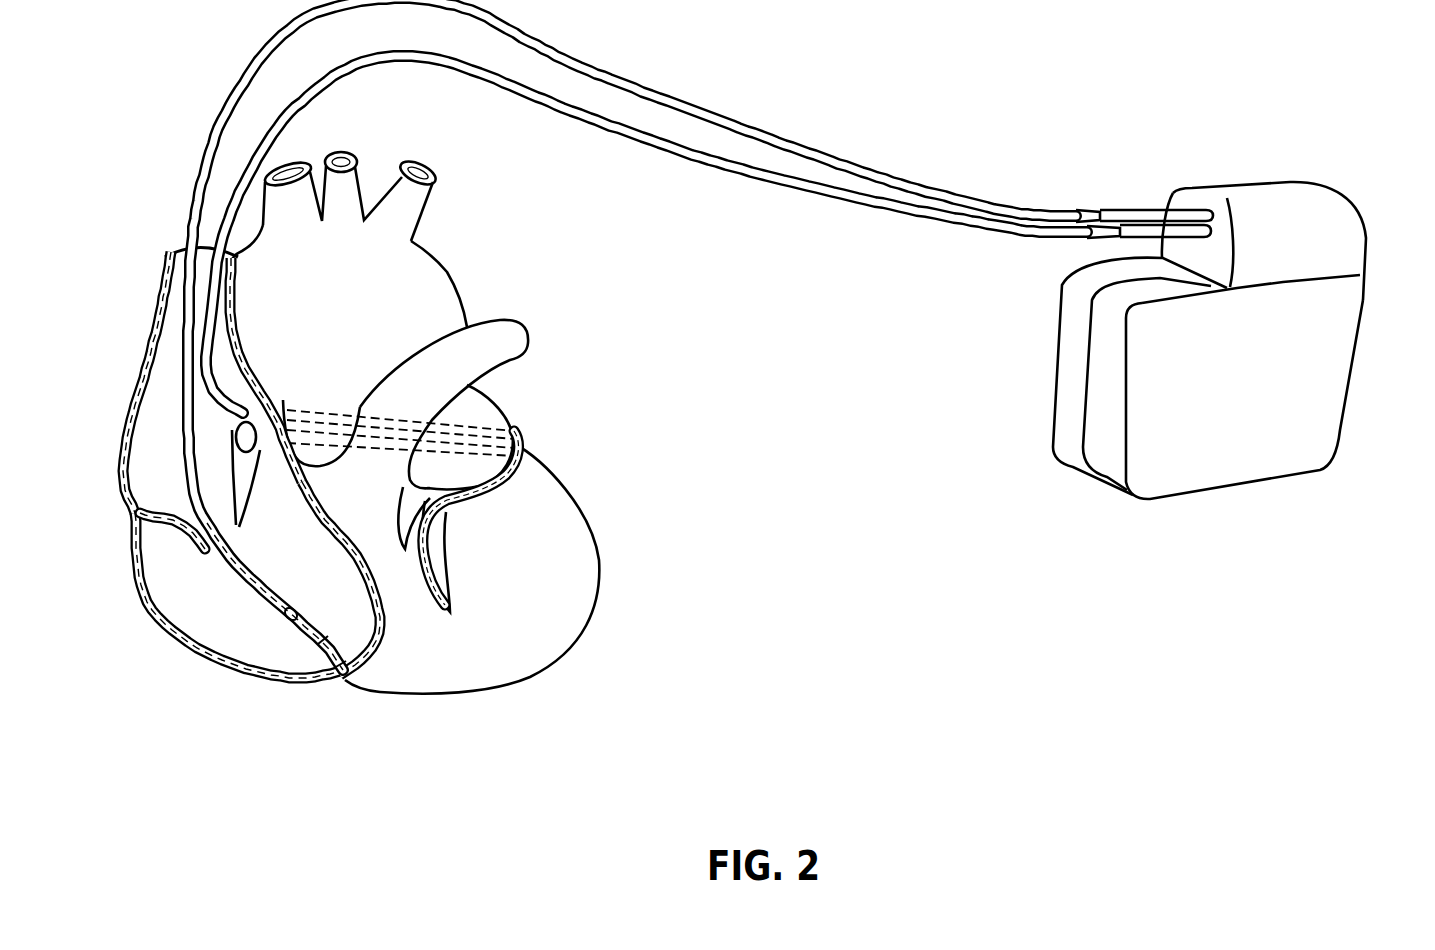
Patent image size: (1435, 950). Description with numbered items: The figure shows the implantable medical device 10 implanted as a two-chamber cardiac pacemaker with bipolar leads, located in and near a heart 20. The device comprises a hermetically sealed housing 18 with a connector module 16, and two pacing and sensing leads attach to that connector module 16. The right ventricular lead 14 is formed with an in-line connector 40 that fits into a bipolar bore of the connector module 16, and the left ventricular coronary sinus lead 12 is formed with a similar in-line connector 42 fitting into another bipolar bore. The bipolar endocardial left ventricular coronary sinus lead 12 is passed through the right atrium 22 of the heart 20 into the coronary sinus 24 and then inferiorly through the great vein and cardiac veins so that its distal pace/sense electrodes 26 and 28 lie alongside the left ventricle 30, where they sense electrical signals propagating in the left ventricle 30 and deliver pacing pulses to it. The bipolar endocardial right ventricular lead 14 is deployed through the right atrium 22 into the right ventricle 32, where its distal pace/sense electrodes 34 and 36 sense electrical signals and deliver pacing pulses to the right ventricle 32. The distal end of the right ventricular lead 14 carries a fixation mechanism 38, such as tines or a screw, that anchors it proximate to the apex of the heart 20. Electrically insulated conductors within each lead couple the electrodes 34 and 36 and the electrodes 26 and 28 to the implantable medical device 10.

The implantable medical device 10 is at (1241, 333).
The left ventricular coronary sinus lead 12 is at (290, 115).
The right ventricular lead 14 is at (205, 142).
The connector module 16 is at (1293, 203).
The hermetically sealed housing 18 is at (1150, 482).
The heart 20 is at (612, 322).
The right atrium 22 is at (148, 453).
The coronary sinus 24 is at (523, 436).
The pace/sense electrode 26 is at (447, 530).
The pace/sense electrode 28 is at (440, 560).
The left ventricle 30 is at (568, 593).
The right ventricle 32 is at (172, 582).
The pace/sense electrode 34 is at (287, 618).
The pace/sense electrode 36 is at (327, 648).
The fixation mechanism 38 is at (343, 663).
The in-line connector 40 is at (1116, 206).
The in-line connector 42 is at (1162, 224).